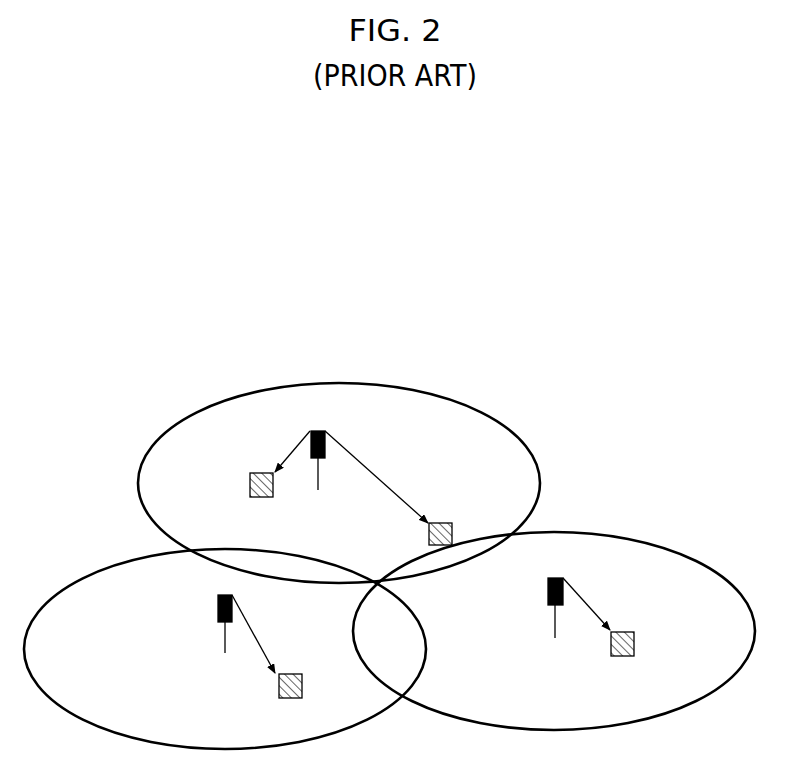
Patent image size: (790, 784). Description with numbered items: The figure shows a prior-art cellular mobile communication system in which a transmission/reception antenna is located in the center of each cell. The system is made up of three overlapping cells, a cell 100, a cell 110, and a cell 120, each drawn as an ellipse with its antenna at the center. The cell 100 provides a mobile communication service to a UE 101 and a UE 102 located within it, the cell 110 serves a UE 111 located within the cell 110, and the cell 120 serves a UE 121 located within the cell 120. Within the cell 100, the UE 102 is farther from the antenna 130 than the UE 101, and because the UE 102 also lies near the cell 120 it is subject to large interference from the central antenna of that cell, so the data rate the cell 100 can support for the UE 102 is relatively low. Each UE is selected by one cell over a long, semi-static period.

The cell 100 is at (435, 392).
The cell 110 is at (123, 562).
The cell 120 is at (592, 532).
The antenna 130 is at (322, 431).
The UE 101 is at (259, 473).
The UE 102 is at (443, 522).
The UE 111 is at (293, 674).
The UE 121 is at (623, 632).